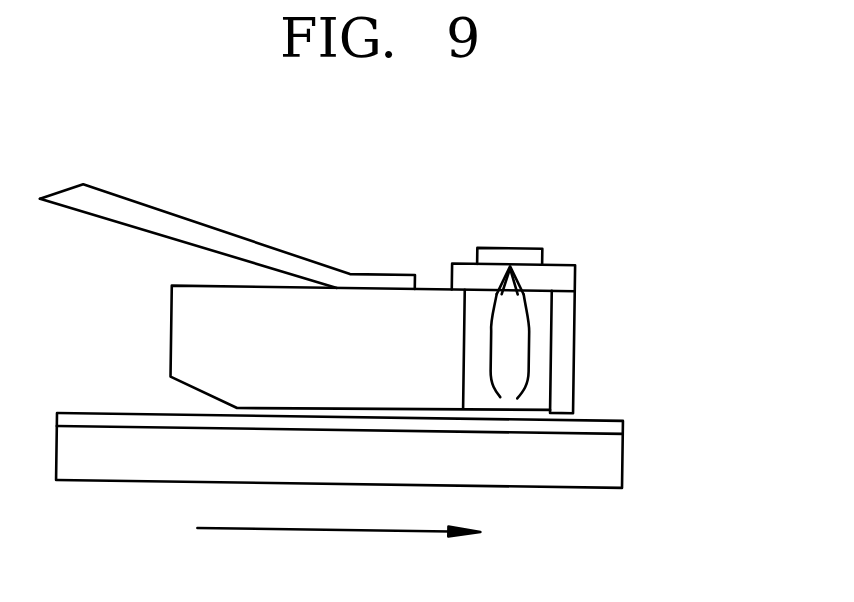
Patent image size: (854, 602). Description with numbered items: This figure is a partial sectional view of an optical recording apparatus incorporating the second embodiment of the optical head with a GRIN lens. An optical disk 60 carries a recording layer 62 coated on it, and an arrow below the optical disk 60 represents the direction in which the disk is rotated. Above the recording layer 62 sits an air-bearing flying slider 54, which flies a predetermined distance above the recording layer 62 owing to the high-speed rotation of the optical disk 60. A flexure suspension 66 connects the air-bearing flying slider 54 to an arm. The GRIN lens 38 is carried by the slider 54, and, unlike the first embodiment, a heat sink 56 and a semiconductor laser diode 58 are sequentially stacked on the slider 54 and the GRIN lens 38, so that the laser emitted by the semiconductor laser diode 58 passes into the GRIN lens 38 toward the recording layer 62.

The GRIN lens 38 is at (538, 347).
The air-bearing flying slider 54 is at (183, 336).
The heat sink 56 is at (560, 271).
The semiconductor laser diode 58 is at (526, 248).
The optical disk 60 is at (613, 467).
The recording layer 62 is at (613, 422).
The flexure suspension 66 is at (213, 233).